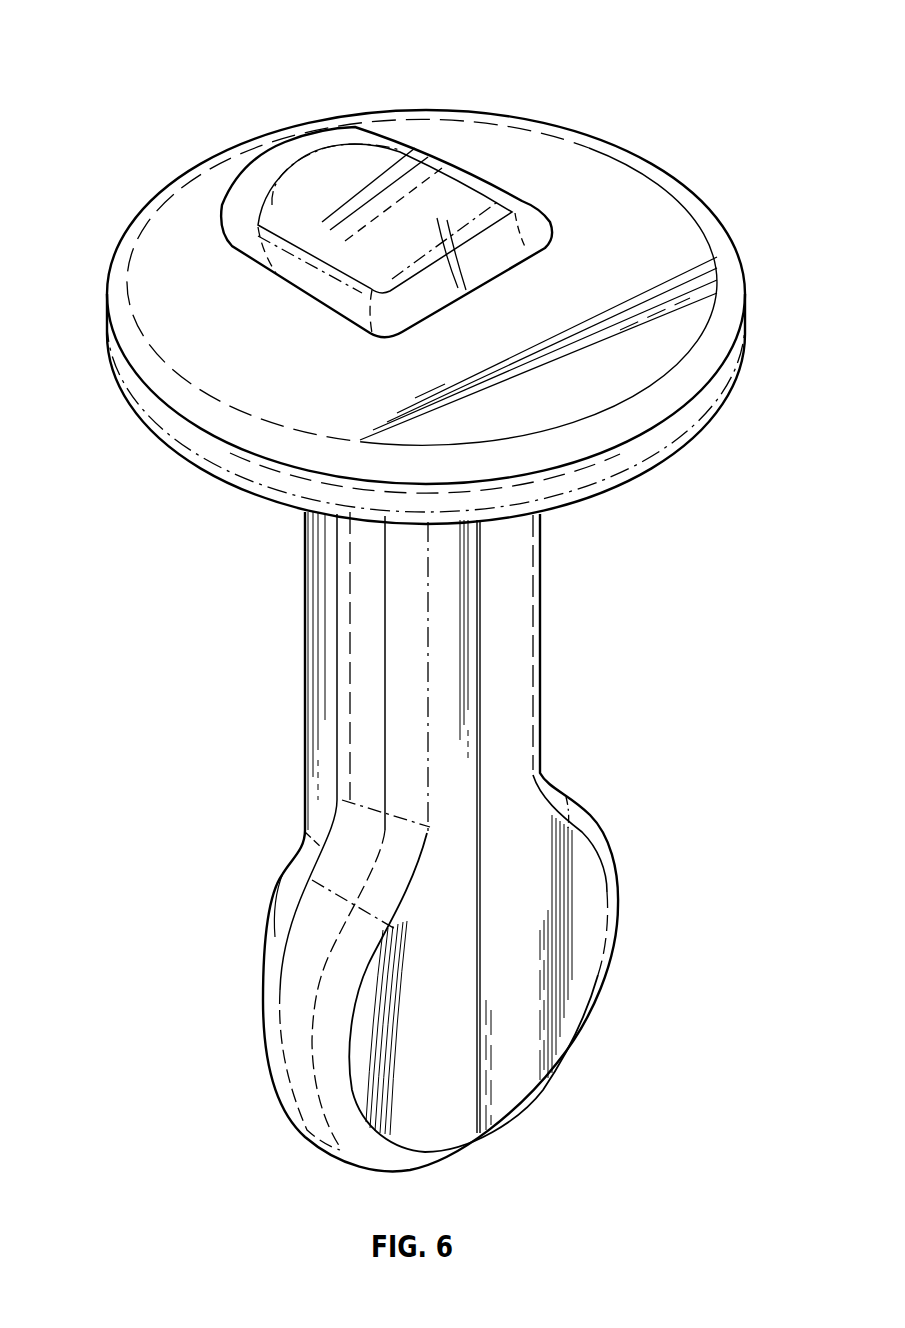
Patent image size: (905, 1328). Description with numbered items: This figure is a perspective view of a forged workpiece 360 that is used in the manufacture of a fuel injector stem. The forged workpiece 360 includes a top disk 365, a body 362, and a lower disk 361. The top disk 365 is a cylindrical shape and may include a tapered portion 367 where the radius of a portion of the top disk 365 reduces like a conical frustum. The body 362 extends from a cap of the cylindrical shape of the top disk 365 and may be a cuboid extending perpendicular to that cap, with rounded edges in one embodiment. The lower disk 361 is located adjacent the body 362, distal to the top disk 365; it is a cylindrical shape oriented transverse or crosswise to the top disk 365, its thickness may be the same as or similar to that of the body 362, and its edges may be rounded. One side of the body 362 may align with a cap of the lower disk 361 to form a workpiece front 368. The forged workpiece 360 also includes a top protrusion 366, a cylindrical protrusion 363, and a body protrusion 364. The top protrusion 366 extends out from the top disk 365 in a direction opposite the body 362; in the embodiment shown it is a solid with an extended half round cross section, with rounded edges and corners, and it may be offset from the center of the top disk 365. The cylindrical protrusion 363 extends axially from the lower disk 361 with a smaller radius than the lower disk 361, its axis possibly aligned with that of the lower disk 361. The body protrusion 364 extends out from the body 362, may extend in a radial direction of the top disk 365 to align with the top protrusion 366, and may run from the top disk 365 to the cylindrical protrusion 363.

The forged workpiece 360 is at (131, 66).
The lower disk 361 is at (607, 872).
The body 362 is at (525, 582).
The cylindrical protrusion 363 is at (290, 893).
The body protrusion 364 is at (313, 684).
The top disk 365 is at (687, 427).
The top protrusion 366 is at (447, 175).
The tapered portion 367 is at (660, 190).
The workpiece front 368 is at (527, 975).